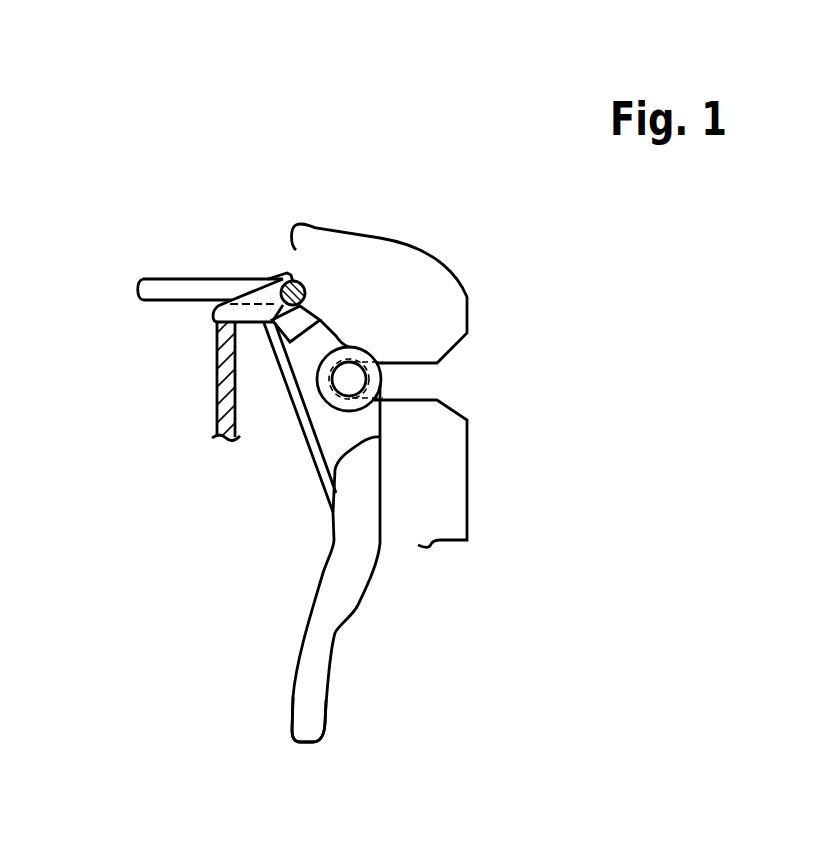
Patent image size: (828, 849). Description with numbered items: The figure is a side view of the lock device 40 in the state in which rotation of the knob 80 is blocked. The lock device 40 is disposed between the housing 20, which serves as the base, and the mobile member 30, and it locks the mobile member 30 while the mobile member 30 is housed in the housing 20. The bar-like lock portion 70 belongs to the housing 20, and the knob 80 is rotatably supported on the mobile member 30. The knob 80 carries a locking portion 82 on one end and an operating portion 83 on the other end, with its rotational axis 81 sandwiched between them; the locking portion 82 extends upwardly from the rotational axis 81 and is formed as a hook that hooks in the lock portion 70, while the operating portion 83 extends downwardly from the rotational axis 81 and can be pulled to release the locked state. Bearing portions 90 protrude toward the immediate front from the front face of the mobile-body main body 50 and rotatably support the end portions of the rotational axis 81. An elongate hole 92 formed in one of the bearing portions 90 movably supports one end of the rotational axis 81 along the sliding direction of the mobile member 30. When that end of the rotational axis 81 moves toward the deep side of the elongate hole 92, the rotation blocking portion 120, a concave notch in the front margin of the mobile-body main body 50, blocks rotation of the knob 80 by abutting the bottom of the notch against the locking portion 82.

The lock device 40 is at (162, 115).
The lock portion 70 is at (168, 288).
The housing 20 is at (210, 291).
The rotation blocking portion 120 is at (217, 373).
The knob 80 is at (433, 629).
The locking portion 82 is at (262, 290).
The rotational axis 81 is at (343, 387).
The operating portion 83 is at (322, 718).
The bearing portion 90 is at (512, 400).
The mobile-body main body 50 is at (387, 238).
The mobile member 30 is at (380, 293).
The elongate hole 92 is at (443, 383).